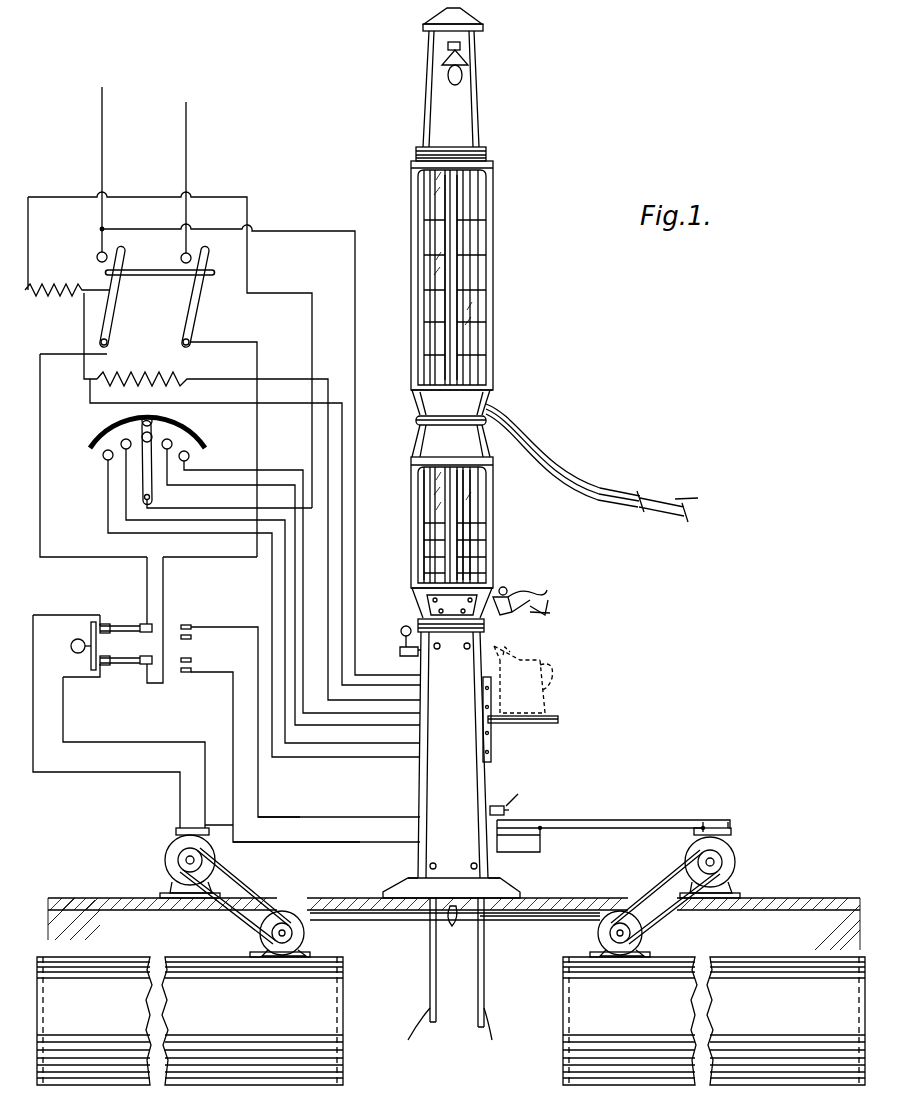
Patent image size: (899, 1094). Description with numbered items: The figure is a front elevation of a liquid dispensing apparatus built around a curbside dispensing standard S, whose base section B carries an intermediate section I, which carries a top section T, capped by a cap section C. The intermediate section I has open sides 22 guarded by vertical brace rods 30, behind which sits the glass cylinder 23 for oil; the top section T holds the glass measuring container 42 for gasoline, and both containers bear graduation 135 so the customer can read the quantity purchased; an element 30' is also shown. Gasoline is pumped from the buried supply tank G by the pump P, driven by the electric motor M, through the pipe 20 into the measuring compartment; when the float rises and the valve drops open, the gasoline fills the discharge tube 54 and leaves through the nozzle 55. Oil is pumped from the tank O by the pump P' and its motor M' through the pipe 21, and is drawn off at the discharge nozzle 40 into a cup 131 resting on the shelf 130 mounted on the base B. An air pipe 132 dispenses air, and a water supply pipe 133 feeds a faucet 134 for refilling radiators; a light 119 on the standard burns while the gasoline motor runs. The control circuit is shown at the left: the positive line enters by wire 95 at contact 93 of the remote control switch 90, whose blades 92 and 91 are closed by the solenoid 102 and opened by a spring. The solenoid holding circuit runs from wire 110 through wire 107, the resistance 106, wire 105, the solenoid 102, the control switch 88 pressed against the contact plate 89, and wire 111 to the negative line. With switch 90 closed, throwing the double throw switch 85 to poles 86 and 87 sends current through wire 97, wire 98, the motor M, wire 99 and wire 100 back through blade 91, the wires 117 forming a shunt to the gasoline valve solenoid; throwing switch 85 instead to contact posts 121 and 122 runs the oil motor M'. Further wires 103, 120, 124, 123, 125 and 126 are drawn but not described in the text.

The light 119 is at (447, 78).
The cap section C is at (468, 122).
The glass measuring container 42 is at (470, 200).
The upper measuring chamber glass 30' is at (505, 277).
The top section T is at (495, 263).
The dispensing standard S is at (464, 410).
The discharge tube 54 is at (548, 452).
The nozzle 55 is at (657, 498).
The brace rods 30 is at (504, 518).
The open sides 22 is at (423, 487).
The graduation 135 is at (467, 522).
The glass cylinder 23 is at (467, 534).
The intermediate section I is at (493, 552).
The discharge nozzle 40 is at (530, 618).
The faucet 134 is at (400, 645).
The cup 131 is at (525, 692).
The shelf 130 is at (531, 735).
The base section B is at (480, 768).
The air pipe 132 is at (507, 808).
The wire 124 is at (665, 813).
The wire 123 is at (667, 830).
The wire 125 is at (507, 853).
The wire 126 is at (545, 843).
The motor M' is at (732, 860).
The pump P' is at (655, 903).
The pipe 21 is at (582, 921).
The pipe 20 is at (362, 918).
The water supply pipe 133 is at (431, 970).
The electric motor M is at (164, 858).
The pump P is at (245, 902).
The supply tank G is at (190, 1021).
The tank O is at (714, 1021).
The wires 117 is at (281, 848).
The wire 120 is at (343, 848).
The wire 95 is at (100, 242).
The contact 93 is at (97, 260).
The wire 110 is at (278, 222).
The solenoid 102 is at (68, 294).
The wire 105 is at (82, 333).
The blade 92 is at (110, 316).
The remote control switch 90 is at (115, 328).
The blade 91 is at (200, 311).
The resistance 106 is at (153, 377).
The wire 107 is at (240, 378).
The wire 100 is at (257, 423).
The contact plate 89 is at (97, 439).
The wire 111 is at (216, 446).
The control switch 88 is at (143, 471).
The wires 103 is at (200, 498).
The wire 97 is at (147, 594).
The contact 86 is at (126, 619).
The double throw switch 85 is at (127, 670).
The contact 87 is at (100, 669).
The wire 98 is at (35, 683).
The wire 99 is at (65, 731).
The contact post 121 is at (184, 625).
The contact post 122 is at (192, 663).